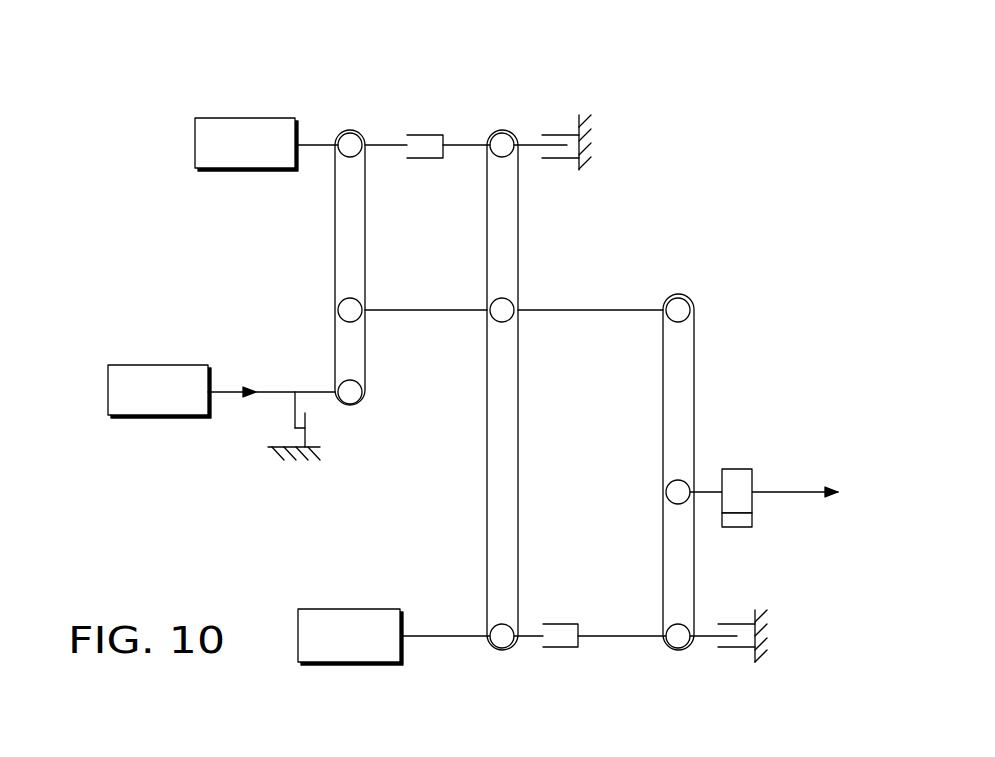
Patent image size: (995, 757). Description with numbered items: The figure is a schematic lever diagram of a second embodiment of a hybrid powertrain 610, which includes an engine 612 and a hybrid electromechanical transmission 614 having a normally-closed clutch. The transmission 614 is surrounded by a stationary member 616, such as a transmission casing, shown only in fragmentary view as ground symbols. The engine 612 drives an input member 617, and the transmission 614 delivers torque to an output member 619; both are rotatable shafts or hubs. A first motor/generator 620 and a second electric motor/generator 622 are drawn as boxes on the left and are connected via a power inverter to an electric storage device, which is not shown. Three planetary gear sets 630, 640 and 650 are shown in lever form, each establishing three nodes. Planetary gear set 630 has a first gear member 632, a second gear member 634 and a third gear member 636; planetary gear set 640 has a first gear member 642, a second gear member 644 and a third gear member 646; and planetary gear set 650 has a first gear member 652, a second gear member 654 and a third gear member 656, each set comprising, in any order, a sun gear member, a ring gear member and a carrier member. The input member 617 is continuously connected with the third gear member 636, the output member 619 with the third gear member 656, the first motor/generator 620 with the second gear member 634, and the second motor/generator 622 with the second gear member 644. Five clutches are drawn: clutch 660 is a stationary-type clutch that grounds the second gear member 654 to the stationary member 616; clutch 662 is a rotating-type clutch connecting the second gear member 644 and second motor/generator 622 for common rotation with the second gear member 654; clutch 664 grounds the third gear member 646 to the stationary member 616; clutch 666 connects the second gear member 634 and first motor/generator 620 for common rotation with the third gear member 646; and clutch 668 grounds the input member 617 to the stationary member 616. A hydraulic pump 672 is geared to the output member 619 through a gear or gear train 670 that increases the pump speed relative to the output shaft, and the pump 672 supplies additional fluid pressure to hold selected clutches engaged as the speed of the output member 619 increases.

The hybrid powertrain 610 is at (578, 41).
The engine 612 is at (108, 392).
The hybrid electromechanical transmission 614 is at (404, 96).
The stationary member 616 is at (583, 142).
The input member 617 is at (320, 392).
The output member 619 is at (805, 491).
The first motor/generator 620 is at (195, 145).
The second electric motor/generator 622 is at (298, 635).
The planetary gear set 630 is at (367, 350).
The first gear member 632 is at (338, 305).
The second gear member 634 is at (346, 133).
The third gear member 636 is at (353, 405).
The planetary gear set 640 is at (518, 482).
The first gear member 642 is at (505, 322).
The second gear member 644 is at (502, 648).
The third gear member 646 is at (506, 133).
The planetary gear set 650 is at (695, 402).
The first gear member 652 is at (693, 310).
The second gear member 654 is at (678, 648).
The third gear member 656 is at (665, 492).
The clutch 660 is at (703, 616).
The clutch 662 is at (529, 653).
The clutch 664 is at (528, 163).
The clutch 666 is at (394, 163).
The clutch 668 is at (277, 402).
The gear train 670 is at (752, 483).
The hydraulic pump 672 is at (752, 520).